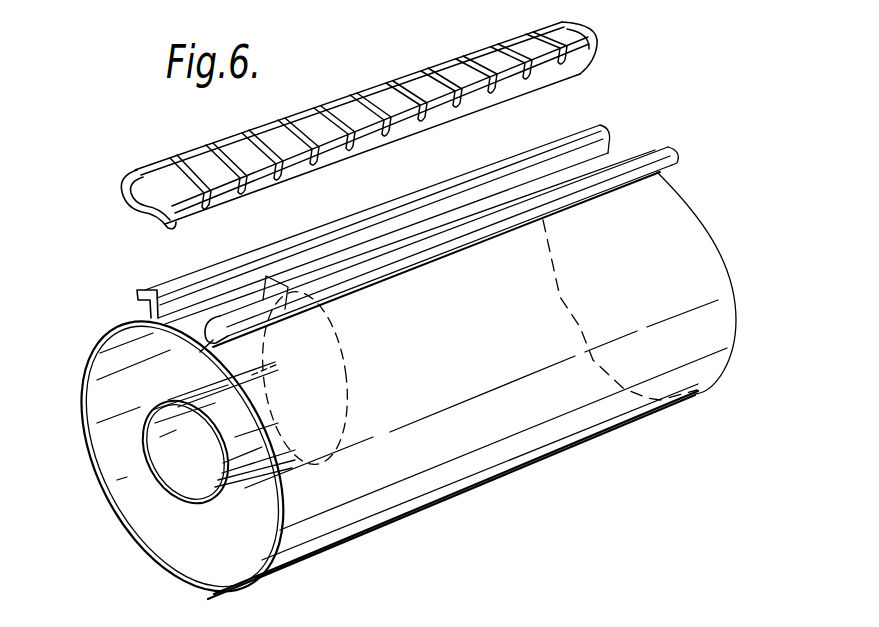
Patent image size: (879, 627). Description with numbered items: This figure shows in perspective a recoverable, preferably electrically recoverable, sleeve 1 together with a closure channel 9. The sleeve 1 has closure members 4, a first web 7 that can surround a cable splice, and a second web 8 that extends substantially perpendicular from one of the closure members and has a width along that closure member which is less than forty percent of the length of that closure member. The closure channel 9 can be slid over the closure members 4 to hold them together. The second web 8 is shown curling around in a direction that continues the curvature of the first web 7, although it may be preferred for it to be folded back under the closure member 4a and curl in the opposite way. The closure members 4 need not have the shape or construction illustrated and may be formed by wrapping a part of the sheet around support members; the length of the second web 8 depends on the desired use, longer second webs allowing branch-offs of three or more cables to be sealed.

The sleeve 1 is at (556, 430).
The closure members 4 is at (393, 260).
The closure member 4a is at (170, 302).
The first web 7 is at (380, 473).
The second web 8 is at (170, 452).
The closure channel 9 is at (148, 168).